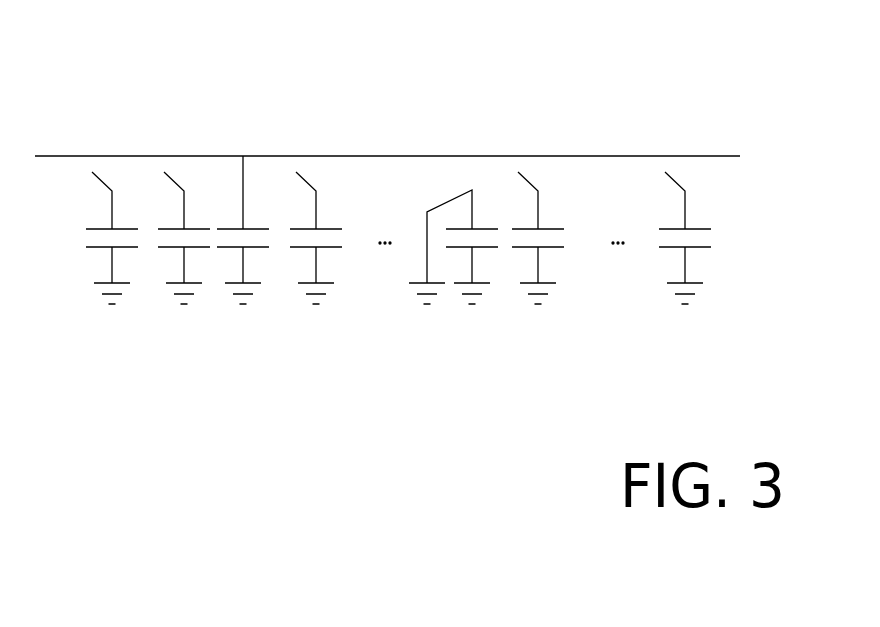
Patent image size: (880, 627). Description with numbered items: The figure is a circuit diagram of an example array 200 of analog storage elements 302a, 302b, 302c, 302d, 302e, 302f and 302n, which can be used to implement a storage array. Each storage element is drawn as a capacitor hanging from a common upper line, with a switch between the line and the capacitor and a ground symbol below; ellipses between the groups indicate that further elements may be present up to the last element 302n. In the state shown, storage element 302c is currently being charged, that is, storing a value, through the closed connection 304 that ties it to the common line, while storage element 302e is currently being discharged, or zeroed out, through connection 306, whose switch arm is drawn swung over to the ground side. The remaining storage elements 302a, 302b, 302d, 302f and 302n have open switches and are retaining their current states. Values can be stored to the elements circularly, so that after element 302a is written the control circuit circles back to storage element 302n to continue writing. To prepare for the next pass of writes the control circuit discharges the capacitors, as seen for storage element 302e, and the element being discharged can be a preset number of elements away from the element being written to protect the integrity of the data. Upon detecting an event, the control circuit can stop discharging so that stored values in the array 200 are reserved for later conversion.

The array of analog storage elements 200 is at (390, 221).
The analog storage element 302a is at (64, 289).
The analog storage element 302b is at (165, 326).
The analog storage element 302c is at (262, 240).
The analog storage element 302d is at (350, 281).
The analog storage element 302e is at (449, 235).
The analog storage element 302f is at (567, 269).
The analog storage element 302n is at (726, 270).
The connection 304 is at (243, 168).
The connection 306 is at (448, 200).